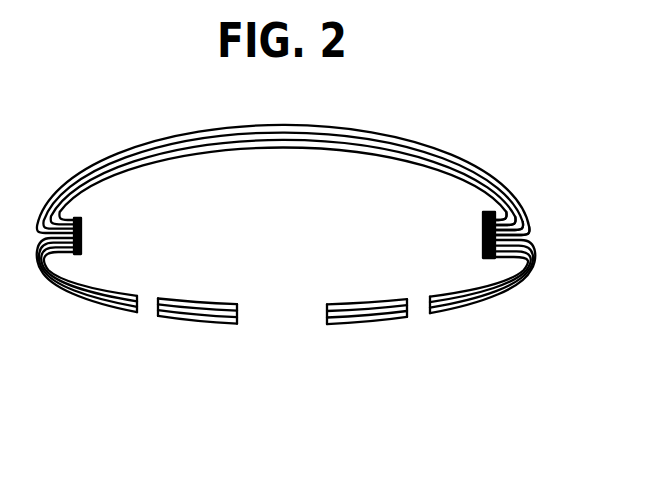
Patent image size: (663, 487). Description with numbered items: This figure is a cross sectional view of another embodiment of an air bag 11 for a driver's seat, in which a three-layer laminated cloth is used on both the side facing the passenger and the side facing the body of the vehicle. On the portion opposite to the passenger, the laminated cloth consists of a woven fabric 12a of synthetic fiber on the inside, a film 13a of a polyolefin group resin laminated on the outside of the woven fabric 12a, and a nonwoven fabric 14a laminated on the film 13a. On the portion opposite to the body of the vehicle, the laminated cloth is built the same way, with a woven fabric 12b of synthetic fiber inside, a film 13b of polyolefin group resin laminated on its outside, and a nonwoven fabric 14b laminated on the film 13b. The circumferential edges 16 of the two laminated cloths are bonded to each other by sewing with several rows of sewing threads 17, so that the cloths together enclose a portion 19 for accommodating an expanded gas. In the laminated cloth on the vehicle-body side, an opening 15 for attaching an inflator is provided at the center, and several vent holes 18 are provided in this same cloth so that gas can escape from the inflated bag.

The air bag 11 is at (445, 129).
The woven fabric 12a is at (433, 172).
The woven fabric 12b is at (439, 292).
The film 13a is at (482, 178).
The film 13b is at (457, 309).
The nonwoven fabric 14a is at (462, 166).
The nonwoven fabric 14b is at (489, 296).
The opening 15 is at (280, 317).
The circumferential edges 16 is at (486, 222).
The sewing threads 17 is at (516, 199).
The vent holes 18 is at (148, 312).
The portion for accommodating an expanded gas 19 is at (293, 247).